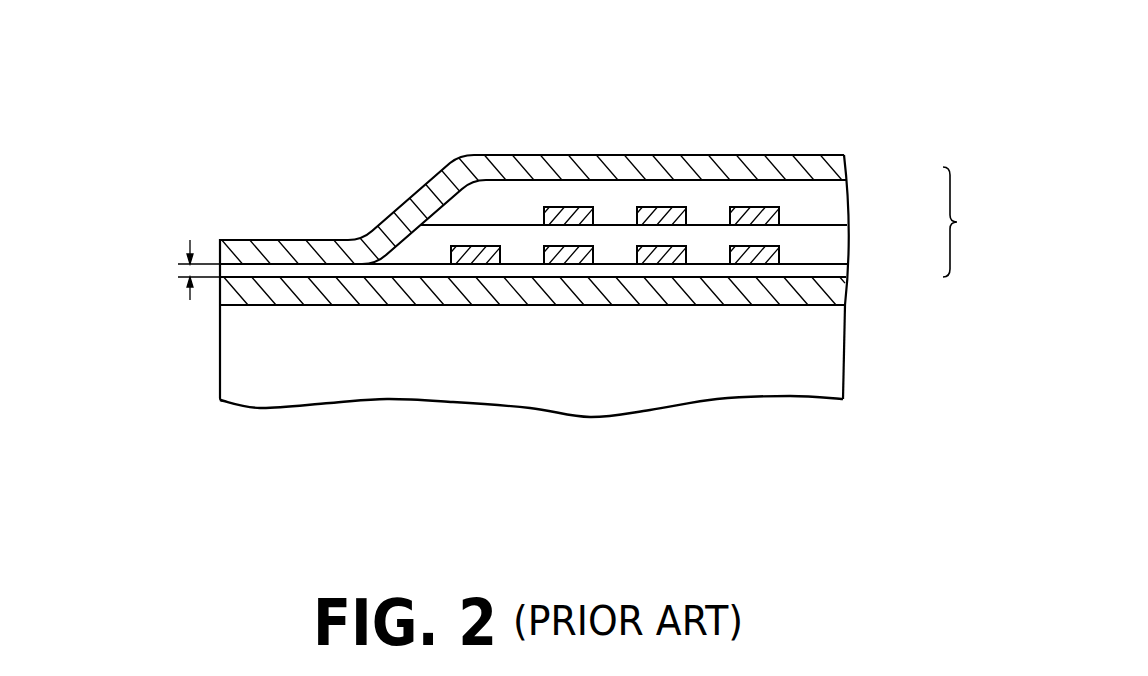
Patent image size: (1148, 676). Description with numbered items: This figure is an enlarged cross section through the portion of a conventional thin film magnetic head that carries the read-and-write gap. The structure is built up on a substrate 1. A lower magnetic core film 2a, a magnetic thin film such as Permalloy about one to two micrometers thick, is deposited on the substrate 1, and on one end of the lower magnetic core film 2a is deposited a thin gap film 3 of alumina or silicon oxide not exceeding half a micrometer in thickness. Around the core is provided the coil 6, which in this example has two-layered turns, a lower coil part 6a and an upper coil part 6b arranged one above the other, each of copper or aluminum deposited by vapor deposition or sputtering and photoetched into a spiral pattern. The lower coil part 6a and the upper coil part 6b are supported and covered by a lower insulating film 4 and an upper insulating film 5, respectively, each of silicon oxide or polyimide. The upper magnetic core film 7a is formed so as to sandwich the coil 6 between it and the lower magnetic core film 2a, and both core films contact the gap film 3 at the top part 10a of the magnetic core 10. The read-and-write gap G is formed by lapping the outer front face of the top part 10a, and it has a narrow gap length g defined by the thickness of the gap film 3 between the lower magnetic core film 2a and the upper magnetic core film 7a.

The substrate 1 is at (310, 388).
The lower magnetic core film 2a is at (835, 293).
The gap film 3 is at (400, 270).
The lower insulating film 4 is at (718, 253).
The upper insulating film 5 is at (818, 210).
The coil 6 is at (665, 86).
The lower coil part 6a is at (689, 252).
The upper coil part 6b is at (745, 207).
The upper magnetic core film 7a is at (838, 170).
The magnetic core 10 is at (971, 222).
The top part 10a is at (268, 240).
The read-and-write gap G is at (220, 264).
The gap length g is at (184, 274).